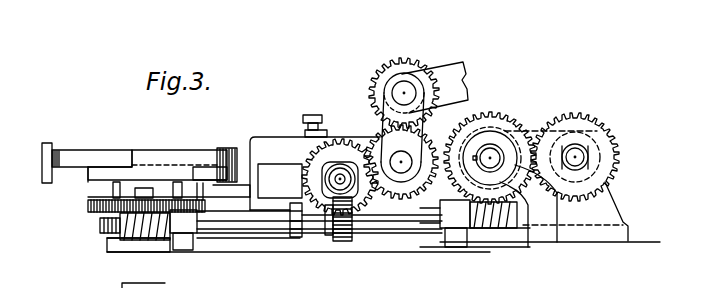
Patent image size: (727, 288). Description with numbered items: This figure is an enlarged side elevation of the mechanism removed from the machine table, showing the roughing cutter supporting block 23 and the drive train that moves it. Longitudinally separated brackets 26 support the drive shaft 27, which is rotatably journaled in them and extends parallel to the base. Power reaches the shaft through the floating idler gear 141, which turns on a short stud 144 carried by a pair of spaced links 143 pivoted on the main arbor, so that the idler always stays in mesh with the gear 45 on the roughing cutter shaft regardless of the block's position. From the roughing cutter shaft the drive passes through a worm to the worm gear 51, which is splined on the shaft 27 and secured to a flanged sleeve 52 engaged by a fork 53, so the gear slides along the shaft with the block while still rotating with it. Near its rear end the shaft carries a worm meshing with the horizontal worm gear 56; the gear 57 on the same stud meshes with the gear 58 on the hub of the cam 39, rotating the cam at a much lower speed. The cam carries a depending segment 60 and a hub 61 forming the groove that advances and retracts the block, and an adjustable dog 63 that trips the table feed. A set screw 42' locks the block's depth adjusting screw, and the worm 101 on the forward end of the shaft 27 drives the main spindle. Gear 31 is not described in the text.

The roughing cutter supporting block 23 is at (263, 146).
The brackets 26 is at (192, 237).
The drive shaft 27 is at (407, 218).
The gear 31 is at (398, 157).
The cam 39 is at (100, 150).
The set screw 42' is at (313, 110).
The gear 45 is at (430, 138).
The worm gear 51 is at (348, 250).
The flanged sleeve 52 is at (296, 240).
The fork 53 is at (322, 214).
The worm gear 56 is at (102, 228).
The gear 57 is at (103, 199).
The gear 58 is at (101, 214).
The depending segment 60 is at (178, 158).
The hub 61 is at (86, 174).
The dog 63 is at (42, 170).
The worm 101 is at (493, 228).
The floating idler gear 141 is at (416, 47).
The links 143 is at (472, 52).
The stud 144 is at (404, 92).